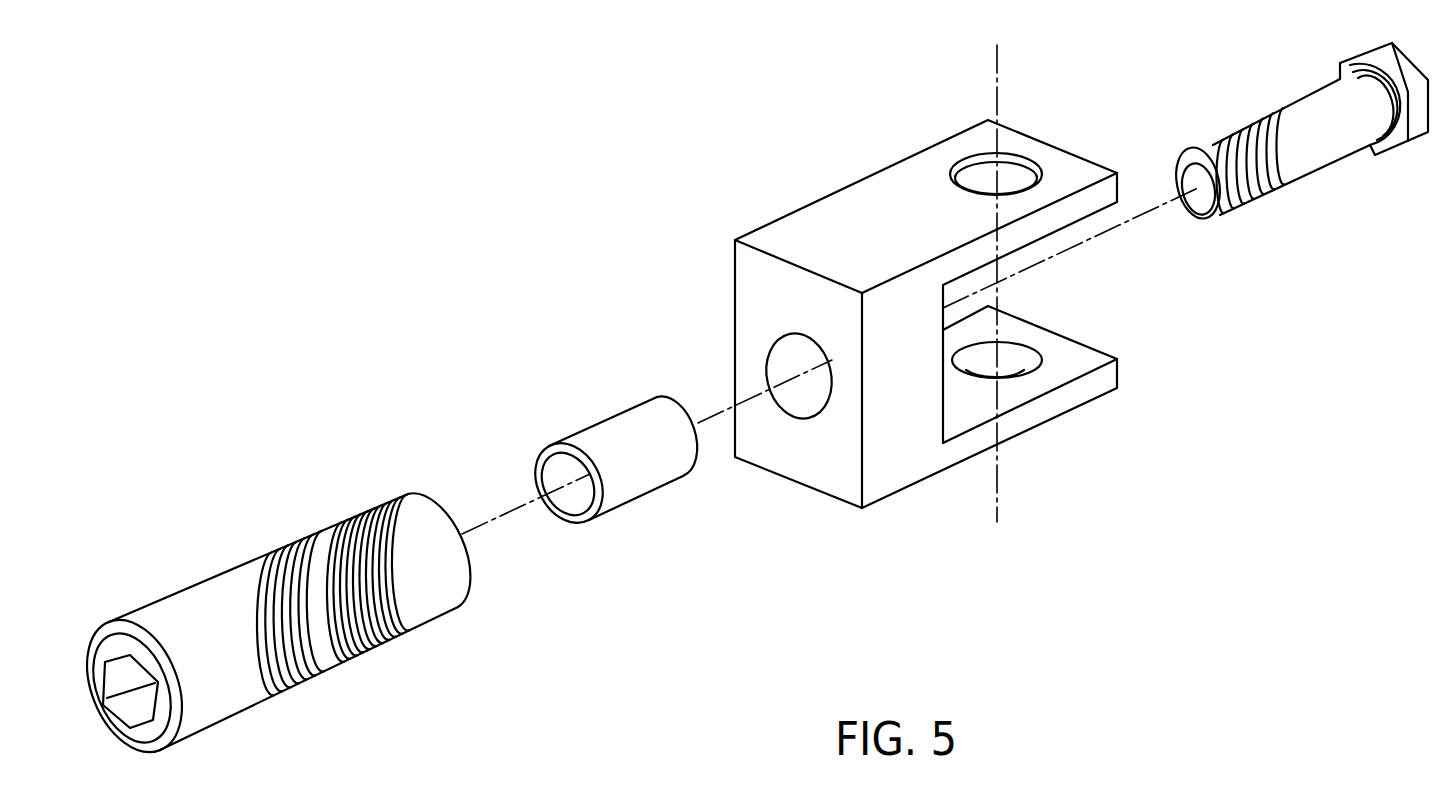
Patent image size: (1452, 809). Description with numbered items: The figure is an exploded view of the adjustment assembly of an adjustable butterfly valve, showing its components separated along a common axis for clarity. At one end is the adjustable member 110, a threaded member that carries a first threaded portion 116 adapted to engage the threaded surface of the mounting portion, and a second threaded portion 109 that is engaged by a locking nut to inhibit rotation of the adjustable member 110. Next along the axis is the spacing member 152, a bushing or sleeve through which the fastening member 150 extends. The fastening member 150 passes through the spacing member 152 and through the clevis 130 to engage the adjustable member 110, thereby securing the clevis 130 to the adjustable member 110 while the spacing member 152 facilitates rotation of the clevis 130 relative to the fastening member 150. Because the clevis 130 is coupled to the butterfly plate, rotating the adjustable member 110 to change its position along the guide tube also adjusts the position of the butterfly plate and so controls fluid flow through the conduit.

The second threaded portion 109 is at (269, 633).
The adjustable member 110 is at (221, 711).
The first threaded portion 116 is at (393, 638).
The clevis 130 is at (797, 224).
The fastening member 150 is at (1321, 160).
The spacing member 152 is at (629, 499).